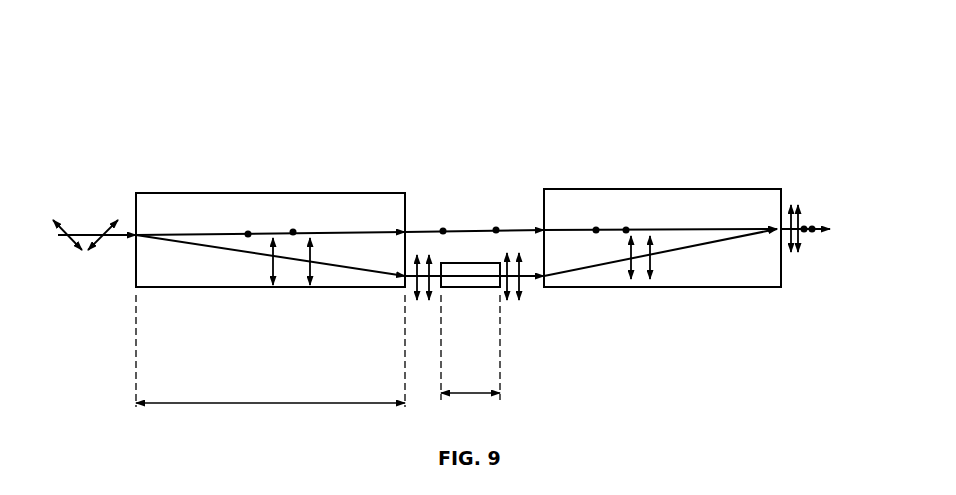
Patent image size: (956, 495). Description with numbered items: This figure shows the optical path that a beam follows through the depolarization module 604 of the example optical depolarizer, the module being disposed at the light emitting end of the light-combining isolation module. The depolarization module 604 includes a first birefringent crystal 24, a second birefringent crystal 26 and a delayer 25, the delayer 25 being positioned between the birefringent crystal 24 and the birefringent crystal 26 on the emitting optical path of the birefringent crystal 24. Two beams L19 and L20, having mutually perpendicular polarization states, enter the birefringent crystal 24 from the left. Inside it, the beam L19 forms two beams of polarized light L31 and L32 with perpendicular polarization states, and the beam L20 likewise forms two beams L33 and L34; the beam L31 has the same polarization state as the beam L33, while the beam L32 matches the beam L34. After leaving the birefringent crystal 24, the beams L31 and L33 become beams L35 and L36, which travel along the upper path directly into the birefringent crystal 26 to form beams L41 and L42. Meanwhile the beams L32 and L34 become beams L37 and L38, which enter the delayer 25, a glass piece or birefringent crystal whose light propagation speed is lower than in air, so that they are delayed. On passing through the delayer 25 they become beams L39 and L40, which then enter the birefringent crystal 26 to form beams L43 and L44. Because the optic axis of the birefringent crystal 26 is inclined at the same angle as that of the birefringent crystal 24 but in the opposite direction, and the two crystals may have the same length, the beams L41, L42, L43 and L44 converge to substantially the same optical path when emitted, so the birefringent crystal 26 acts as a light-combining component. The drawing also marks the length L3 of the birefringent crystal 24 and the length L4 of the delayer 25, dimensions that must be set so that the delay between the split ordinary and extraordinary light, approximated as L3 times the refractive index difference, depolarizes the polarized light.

The depolarization module 604 is at (150, 72).
The birefringent crystal 24 is at (258, 200).
The delayer 25 is at (452, 266).
The birefringent crystal 26 is at (732, 283).
The beam L19 is at (78, 237).
The beam L20 is at (105, 237).
The polarized light beam L31 is at (246, 233).
The polarized light beam L32 is at (270, 257).
The polarized light beam L33 is at (296, 230).
The polarized light beam L34 is at (314, 258).
The beam L35 is at (440, 228).
The beam L36 is at (487, 228).
The beam L37 is at (412, 292).
The beam L38 is at (432, 282).
The beam L39 is at (503, 288).
The beam L40 is at (524, 290).
The beam L41 is at (598, 228).
The beam L42 is at (629, 228).
The beam L43 is at (630, 262).
The beam L44 is at (653, 260).
The length of the birefringent crystal L3 is at (270, 351).
The length of the delayer L4 is at (470, 347).